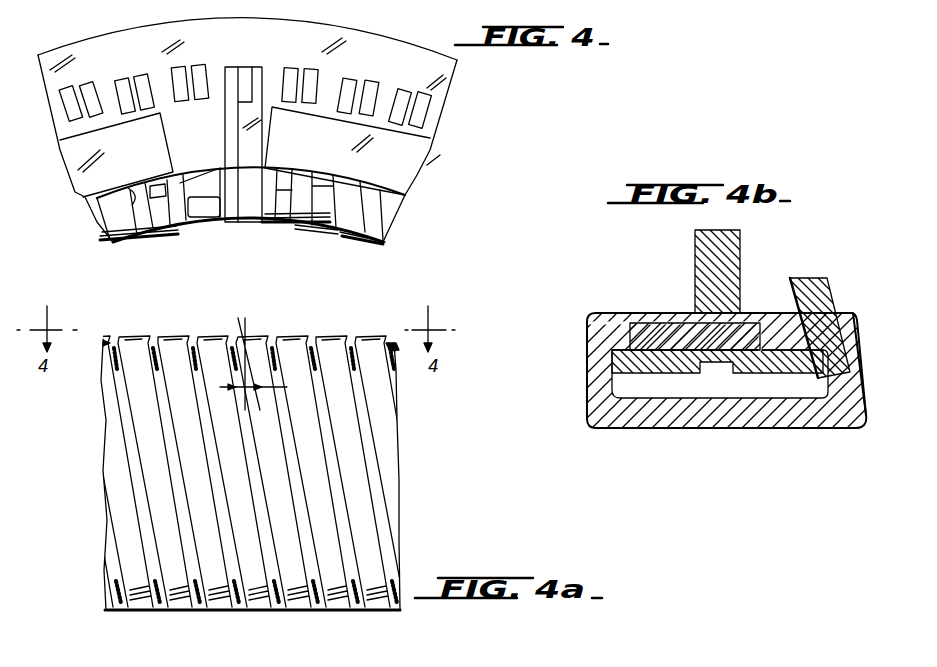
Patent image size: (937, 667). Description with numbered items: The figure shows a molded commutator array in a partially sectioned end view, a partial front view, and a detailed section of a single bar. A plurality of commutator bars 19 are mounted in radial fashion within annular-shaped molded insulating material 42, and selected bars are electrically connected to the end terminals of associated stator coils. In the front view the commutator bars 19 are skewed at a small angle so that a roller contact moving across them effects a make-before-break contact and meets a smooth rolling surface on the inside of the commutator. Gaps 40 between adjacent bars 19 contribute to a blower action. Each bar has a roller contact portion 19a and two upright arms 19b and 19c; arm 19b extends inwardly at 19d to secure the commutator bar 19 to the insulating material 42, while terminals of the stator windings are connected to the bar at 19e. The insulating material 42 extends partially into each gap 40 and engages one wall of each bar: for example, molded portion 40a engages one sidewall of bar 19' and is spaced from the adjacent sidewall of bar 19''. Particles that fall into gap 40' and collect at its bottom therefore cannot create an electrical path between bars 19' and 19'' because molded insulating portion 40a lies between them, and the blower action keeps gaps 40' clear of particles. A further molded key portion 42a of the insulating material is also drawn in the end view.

In FIG. 4, the commutator bar 19 is at (137, 231).
In FIG. 4A, the commutator bar 19 is at (256, 453).
In FIG. 4, the gap 40 is at (184, 218).
In FIG. 4A, the gap 40 is at (255, 450).
In FIG. 4, the wedge key 42a is at (292, 180).
In FIG. 4, the molded portion 40a is at (322, 173).
In FIG. 4, the commutator bar 19' is at (277, 217).
In FIG. 4, the gap 40' is at (316, 219).
In FIG. 4, the commutator bar 19'' is at (359, 227).
In FIG. 4B, the roller contact portion 19a is at (637, 417).
In FIG. 4B, the upright arm 19b is at (590, 372).
In FIG. 4B, the upright arm 19c is at (843, 358).
In FIG. 4B, the inwardly extending portion 19d is at (650, 330).
In FIG. 4B, the terminal connection portion 19e is at (817, 268).
In FIG. 4B, the insulating material 42 is at (658, 367).